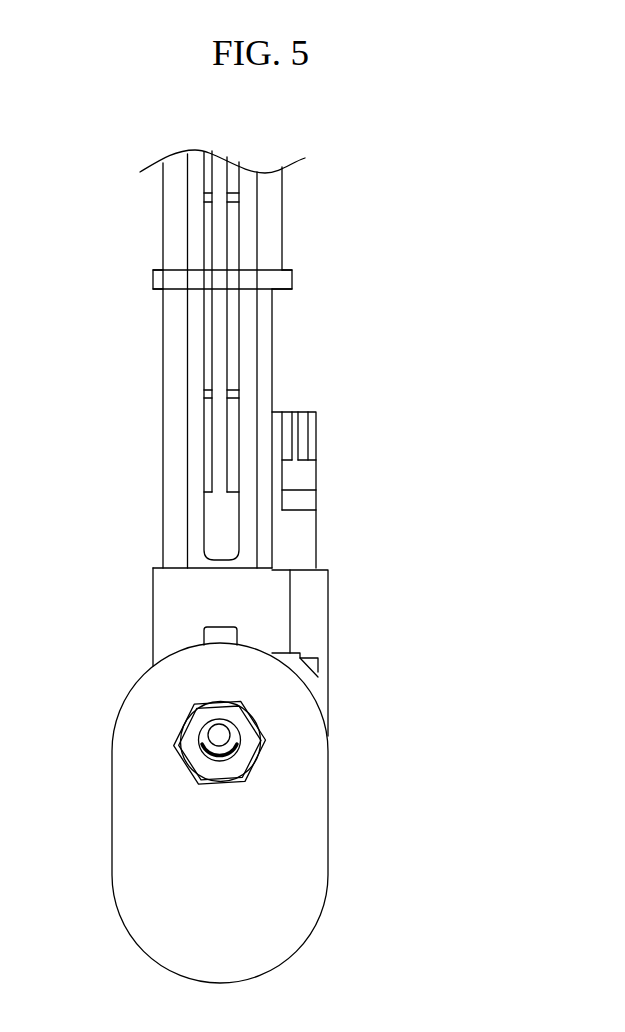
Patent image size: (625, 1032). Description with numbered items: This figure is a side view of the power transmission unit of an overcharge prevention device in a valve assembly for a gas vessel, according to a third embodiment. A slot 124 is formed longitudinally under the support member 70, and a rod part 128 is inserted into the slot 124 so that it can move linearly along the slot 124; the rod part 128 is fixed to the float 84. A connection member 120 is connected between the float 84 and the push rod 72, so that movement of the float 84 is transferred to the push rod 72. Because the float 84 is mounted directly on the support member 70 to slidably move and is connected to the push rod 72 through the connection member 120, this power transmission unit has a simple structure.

The support member 70 is at (175, 515).
The push rod 72 is at (220, 362).
The float 84 is at (297, 833).
The connection member 120 is at (313, 620).
The slot 124 is at (213, 638).
The rod part 128 is at (222, 733).